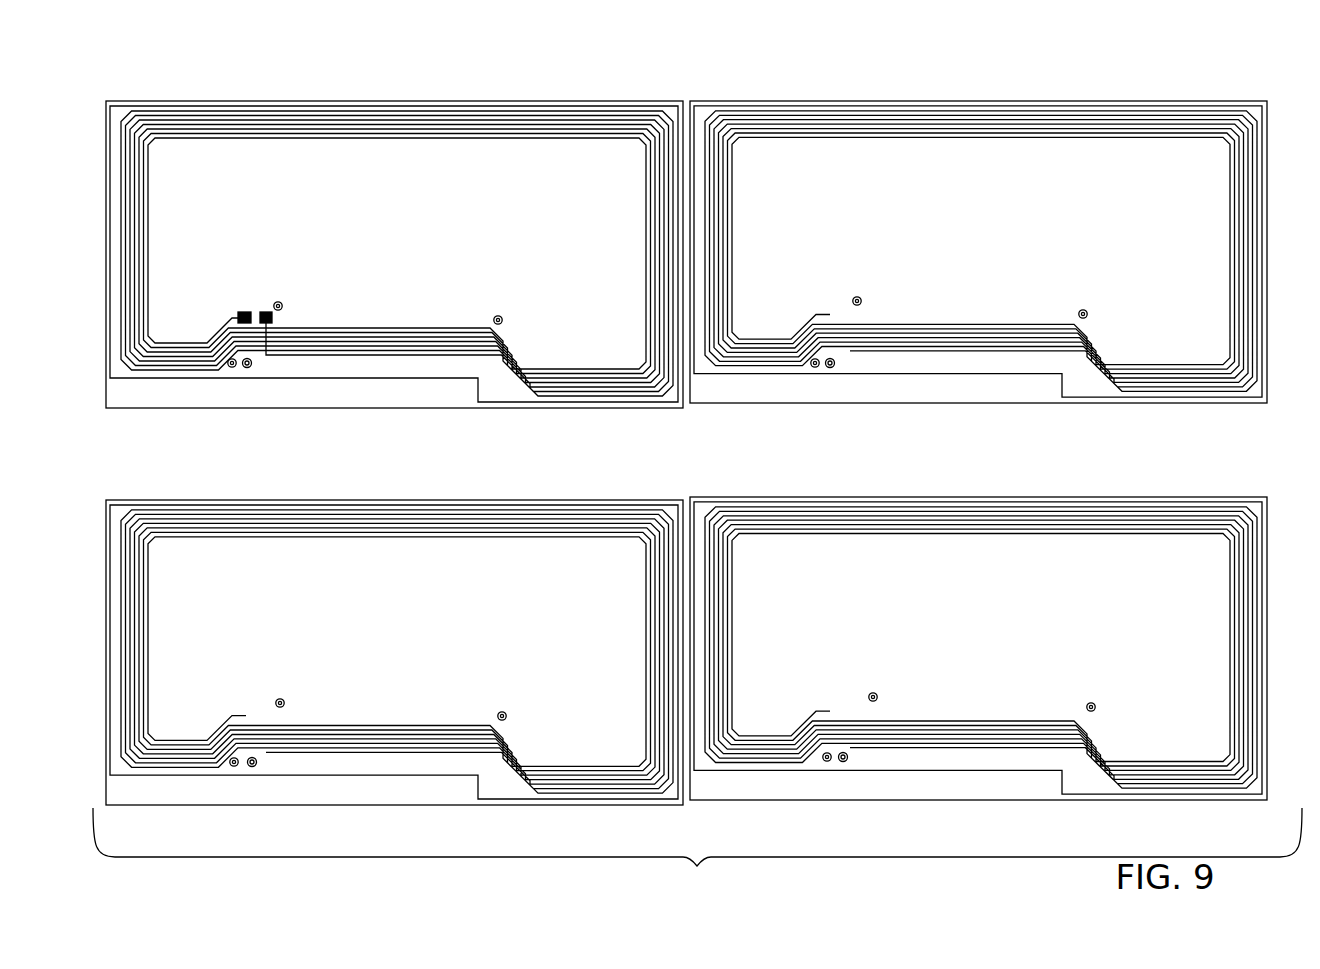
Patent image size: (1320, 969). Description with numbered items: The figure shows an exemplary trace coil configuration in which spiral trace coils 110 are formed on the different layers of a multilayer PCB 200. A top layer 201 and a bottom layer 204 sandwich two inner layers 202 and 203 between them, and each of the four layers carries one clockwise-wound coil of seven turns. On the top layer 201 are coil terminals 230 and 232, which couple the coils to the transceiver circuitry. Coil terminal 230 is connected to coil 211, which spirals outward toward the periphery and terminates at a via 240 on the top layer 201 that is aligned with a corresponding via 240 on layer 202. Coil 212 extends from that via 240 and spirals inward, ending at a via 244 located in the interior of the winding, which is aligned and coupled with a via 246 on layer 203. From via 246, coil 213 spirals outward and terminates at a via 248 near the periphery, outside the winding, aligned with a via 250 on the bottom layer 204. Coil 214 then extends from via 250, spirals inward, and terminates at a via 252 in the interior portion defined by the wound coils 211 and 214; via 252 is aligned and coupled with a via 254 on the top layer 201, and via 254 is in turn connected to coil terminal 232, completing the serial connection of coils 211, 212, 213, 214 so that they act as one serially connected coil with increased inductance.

The multilayer PCB 200 is at (697, 850).
The top layer 201 is at (365, 258).
The layer 202 is at (1000, 259).
The layer 203 is at (367, 643).
The bottom layer 204 is at (988, 646).
The coil 211 is at (113, 262).
The coil 212 is at (1255, 262).
The coil 213 is at (132, 650).
The coil 214 is at (1258, 660).
The trace coils 110 is at (367, 620).
The coil terminal 230 is at (244, 311).
The coil terminal 232 is at (267, 311).
The via 240 is at (230, 367).
The via 244 is at (1082, 318).
The via 246 is at (501, 720).
The via 248 is at (252, 766).
The via 250 is at (827, 761).
The via 252 is at (874, 701).
The via 254 is at (279, 310).